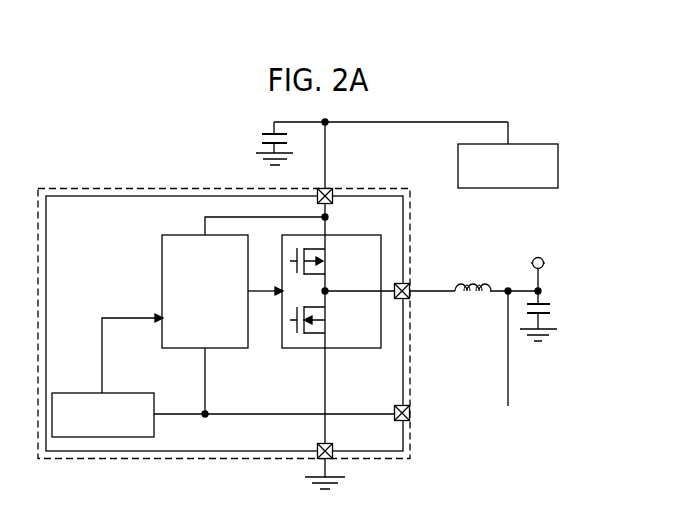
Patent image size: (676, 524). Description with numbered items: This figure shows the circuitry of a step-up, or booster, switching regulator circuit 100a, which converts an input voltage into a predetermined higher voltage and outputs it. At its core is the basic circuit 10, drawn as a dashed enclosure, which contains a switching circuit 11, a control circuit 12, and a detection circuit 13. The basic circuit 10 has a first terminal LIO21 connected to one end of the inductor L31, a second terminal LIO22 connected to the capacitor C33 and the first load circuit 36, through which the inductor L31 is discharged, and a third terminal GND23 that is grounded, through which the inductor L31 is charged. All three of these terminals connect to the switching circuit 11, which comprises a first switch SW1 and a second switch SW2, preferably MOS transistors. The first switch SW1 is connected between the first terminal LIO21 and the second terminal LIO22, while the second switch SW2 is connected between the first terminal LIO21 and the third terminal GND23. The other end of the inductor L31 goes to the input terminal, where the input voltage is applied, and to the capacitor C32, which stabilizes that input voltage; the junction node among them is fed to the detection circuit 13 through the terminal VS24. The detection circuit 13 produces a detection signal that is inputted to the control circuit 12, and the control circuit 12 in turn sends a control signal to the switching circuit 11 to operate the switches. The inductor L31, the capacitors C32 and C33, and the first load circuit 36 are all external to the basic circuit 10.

The step-up switching regulator circuit 100a is at (90, 153).
The basic circuit 10 is at (146, 187).
The switching circuit 11 is at (333, 307).
The control circuit 12 is at (227, 349).
The detection circuit 13 is at (133, 392).
The first load circuit 36 is at (533, 143).
The capacitor C33 is at (255, 137).
The capacitor C32 is at (555, 306).
The inductor L31 is at (467, 298).
The first switch SW1 is at (331, 255).
The second switch SW2 is at (331, 313).
The second terminal LIO22 is at (332, 189).
The first terminal LIO21 is at (437, 268).
The terminal VS24 is at (438, 392).
The third terminal GND23 is at (332, 458).